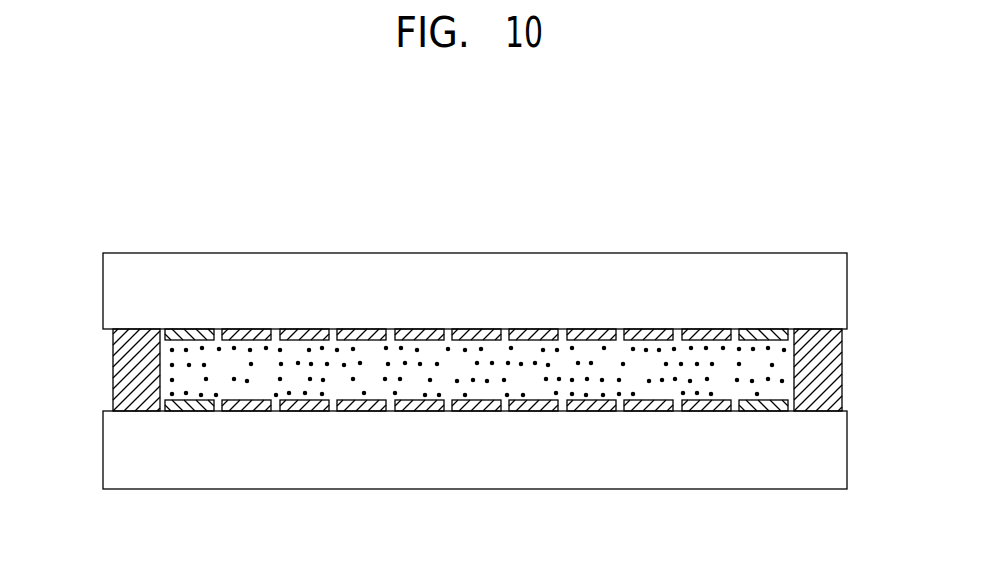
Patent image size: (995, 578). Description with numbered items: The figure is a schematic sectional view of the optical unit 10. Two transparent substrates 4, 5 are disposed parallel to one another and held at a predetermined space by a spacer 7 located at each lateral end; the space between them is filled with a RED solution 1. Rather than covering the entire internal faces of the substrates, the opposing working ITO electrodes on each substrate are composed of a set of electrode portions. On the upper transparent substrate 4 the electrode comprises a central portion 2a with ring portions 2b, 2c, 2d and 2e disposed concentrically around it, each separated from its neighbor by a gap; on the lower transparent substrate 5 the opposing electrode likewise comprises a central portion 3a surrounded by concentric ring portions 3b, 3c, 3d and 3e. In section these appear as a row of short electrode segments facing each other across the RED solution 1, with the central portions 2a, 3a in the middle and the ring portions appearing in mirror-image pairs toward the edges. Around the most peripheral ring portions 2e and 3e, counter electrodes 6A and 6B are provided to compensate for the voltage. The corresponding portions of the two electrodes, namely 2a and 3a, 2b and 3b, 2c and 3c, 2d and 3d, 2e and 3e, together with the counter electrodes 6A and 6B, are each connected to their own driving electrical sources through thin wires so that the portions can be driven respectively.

The RED solution 1 is at (788, 353).
The central portion 2a is at (486, 329).
The ring portion 2b is at (429, 329).
The ring portion 2c is at (364, 329).
The ring portion 2d is at (314, 329).
The most peripheral ring portion 2e is at (254, 329).
The central portion 3a is at (488, 411).
The ring portion 3b is at (433, 411).
The ring portion 3c is at (371, 411).
The ring portion 3d is at (310, 411).
The most peripheral ring portion 3e is at (251, 411).
The transparent substrate 4 is at (122, 292).
The transparent substrate 5 is at (117, 452).
The counter electrode 6A is at (192, 329).
The counter electrode 6B is at (190, 411).
The spacer 7 is at (122, 372).
The optical unit 10 is at (476, 345).